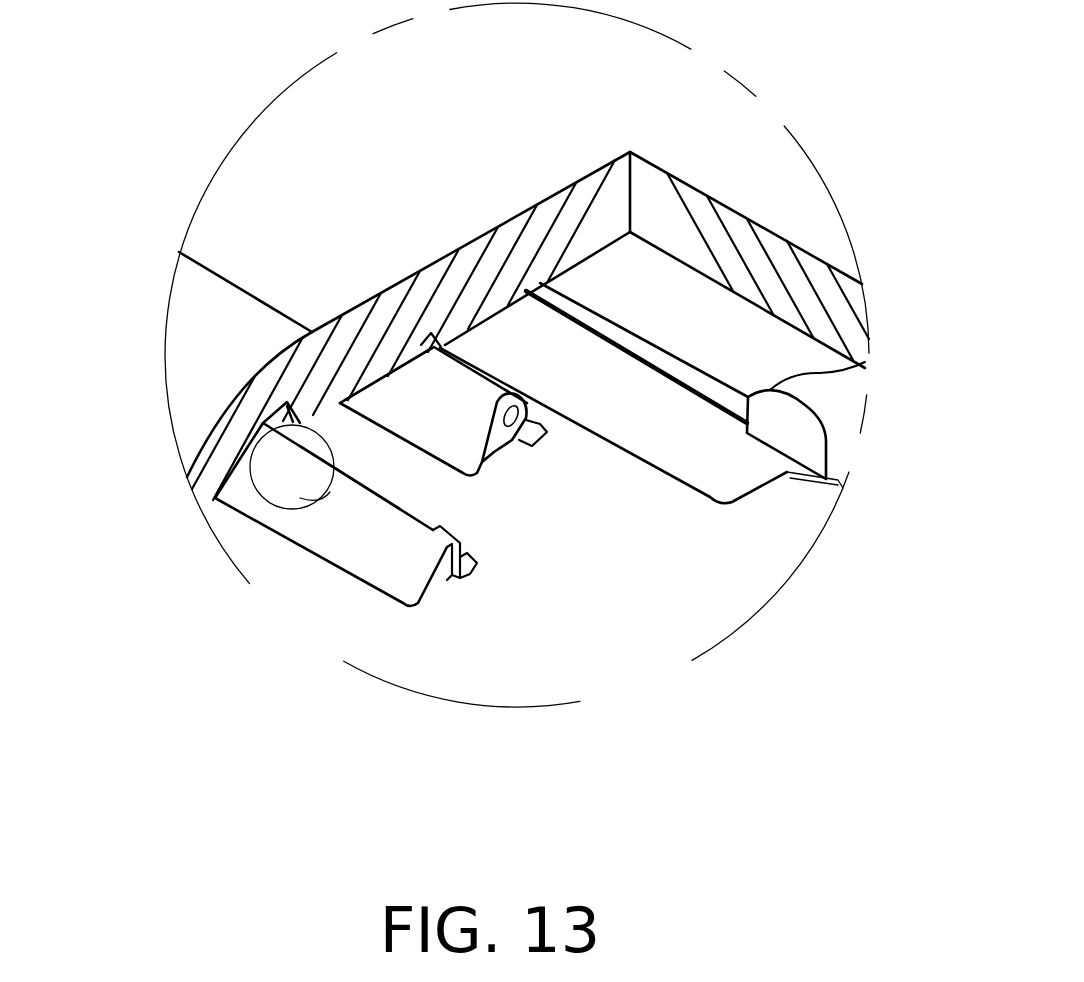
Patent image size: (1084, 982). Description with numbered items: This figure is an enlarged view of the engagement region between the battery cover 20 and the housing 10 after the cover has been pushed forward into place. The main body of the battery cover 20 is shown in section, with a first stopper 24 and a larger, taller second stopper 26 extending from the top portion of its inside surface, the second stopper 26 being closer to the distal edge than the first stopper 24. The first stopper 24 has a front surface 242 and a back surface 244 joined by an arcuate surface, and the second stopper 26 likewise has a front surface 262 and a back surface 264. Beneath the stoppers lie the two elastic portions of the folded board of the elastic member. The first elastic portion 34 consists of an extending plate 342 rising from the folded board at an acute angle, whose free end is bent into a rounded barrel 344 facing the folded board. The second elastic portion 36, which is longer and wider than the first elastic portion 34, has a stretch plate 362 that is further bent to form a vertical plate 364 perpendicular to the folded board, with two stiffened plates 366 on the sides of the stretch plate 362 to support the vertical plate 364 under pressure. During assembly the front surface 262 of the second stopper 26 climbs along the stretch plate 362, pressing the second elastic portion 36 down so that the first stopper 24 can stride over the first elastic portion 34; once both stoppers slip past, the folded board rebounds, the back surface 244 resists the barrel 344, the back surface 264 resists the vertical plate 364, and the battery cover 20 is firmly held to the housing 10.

The housing 10 is at (707, 608).
The battery cover 20 is at (318, 130).
The first stopper 24 is at (452, 350).
The front surface 242 is at (600, 322).
The back surface 244 is at (500, 332).
The second stopper 26 is at (250, 483).
The front surface 262 is at (318, 492).
The back surface 264 is at (285, 425).
The first elastic portion 34 is at (466, 432).
The extending plate 342 is at (405, 395).
The barrel 344 is at (540, 432).
The second elastic portion 36 is at (325, 552).
The stretch plate 362 is at (388, 553).
The vertical plate 364 is at (470, 577).
The stiffened plates 366 is at (440, 580).